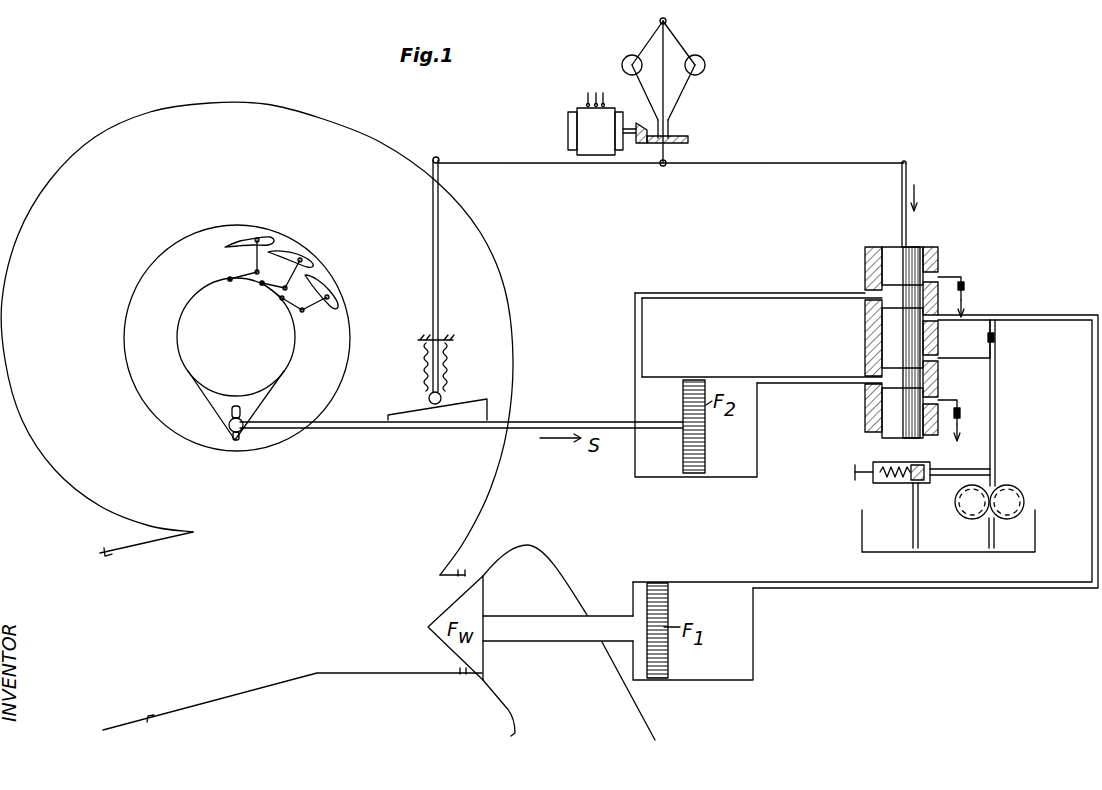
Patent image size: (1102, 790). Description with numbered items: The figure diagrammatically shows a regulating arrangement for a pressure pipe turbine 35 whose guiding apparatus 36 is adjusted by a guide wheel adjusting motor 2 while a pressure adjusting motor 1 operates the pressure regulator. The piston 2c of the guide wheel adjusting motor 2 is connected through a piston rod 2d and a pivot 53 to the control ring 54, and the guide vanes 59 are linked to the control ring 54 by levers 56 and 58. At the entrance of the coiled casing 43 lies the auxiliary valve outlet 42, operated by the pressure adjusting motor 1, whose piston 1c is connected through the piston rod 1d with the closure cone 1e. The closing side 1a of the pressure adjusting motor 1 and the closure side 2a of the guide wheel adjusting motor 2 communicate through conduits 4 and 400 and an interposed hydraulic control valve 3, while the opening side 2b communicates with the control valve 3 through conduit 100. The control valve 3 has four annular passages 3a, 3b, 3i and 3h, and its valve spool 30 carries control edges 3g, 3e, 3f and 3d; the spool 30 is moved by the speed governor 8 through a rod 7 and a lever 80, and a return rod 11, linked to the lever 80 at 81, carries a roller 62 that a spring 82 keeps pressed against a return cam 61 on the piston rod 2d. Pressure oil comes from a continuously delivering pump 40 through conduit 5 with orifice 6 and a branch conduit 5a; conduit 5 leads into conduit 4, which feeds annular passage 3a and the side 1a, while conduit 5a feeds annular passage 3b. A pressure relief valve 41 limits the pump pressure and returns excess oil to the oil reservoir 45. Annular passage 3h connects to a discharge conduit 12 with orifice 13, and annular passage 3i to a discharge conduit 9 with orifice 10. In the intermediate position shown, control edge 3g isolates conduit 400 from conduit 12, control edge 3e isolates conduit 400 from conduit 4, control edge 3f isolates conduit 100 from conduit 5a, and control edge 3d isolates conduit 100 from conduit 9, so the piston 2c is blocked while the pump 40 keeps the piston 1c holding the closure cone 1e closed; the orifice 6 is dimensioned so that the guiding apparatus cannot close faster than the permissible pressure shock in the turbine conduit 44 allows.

The pressure adjusting motor 1 is at (695, 582).
The side of the pressure adjusting motor 1a is at (746, 658).
The piston 1c is at (657, 672).
The piston rod 1d is at (545, 635).
The closure cone 1e is at (450, 645).
The guide wheel adjusting motor 2 is at (712, 376).
The closure side of the guide wheel adjusting motor 2a is at (645, 399).
The opening side of the guide wheel adjusting motor 2b is at (750, 405).
The piston 2c is at (695, 474).
The piston rod 2d is at (546, 420).
The hydraulic control valve 3 is at (940, 255).
The annular passage 3a is at (866, 316).
The annular passage 3b is at (866, 360).
The control edge 3d is at (900, 391).
The control edge 3e is at (908, 308).
The control edge 3f is at (902, 371).
The control edge 3g is at (882, 283).
The annular passage 3h is at (930, 279).
The annular passage 3i is at (920, 404).
The valve spool 30 is at (916, 247).
The conduit 4 is at (1092, 384).
The conduit 5 is at (996, 387).
The conduit 5a is at (958, 356).
The orifice 6 is at (996, 337).
The rod 7 is at (908, 176).
The speed governor 8 is at (705, 62).
The discharge conduit 9 is at (943, 401).
The orifice 10 is at (958, 413).
The return rod 11 is at (433, 262).
The discharge conduit 12 is at (963, 280).
The orifice 13 is at (966, 292).
The turbine 35 is at (97, 172).
The guiding apparatus 36 is at (294, 252).
The pump 40 is at (1023, 498).
The pressure relief valve 41 is at (873, 480).
The auxiliary valve outlet 42 is at (470, 575).
The coiled casing 43 is at (197, 693).
The turbine conduit 44 is at (127, 545).
The oil reservoir 45 is at (862, 518).
The pivot 53 is at (241, 434).
The control ring 54 is at (199, 384).
The lever 56 is at (290, 305).
The lever 58 is at (322, 306).
The guide vanes 59 is at (328, 290).
The return cam 61 is at (433, 417).
The roller 62 is at (428, 398).
The lever 80 is at (770, 162).
The link point 81 is at (436, 157).
The spring 82 is at (424, 360).
The conduit 100 is at (768, 377).
The conduit 400 is at (762, 293).